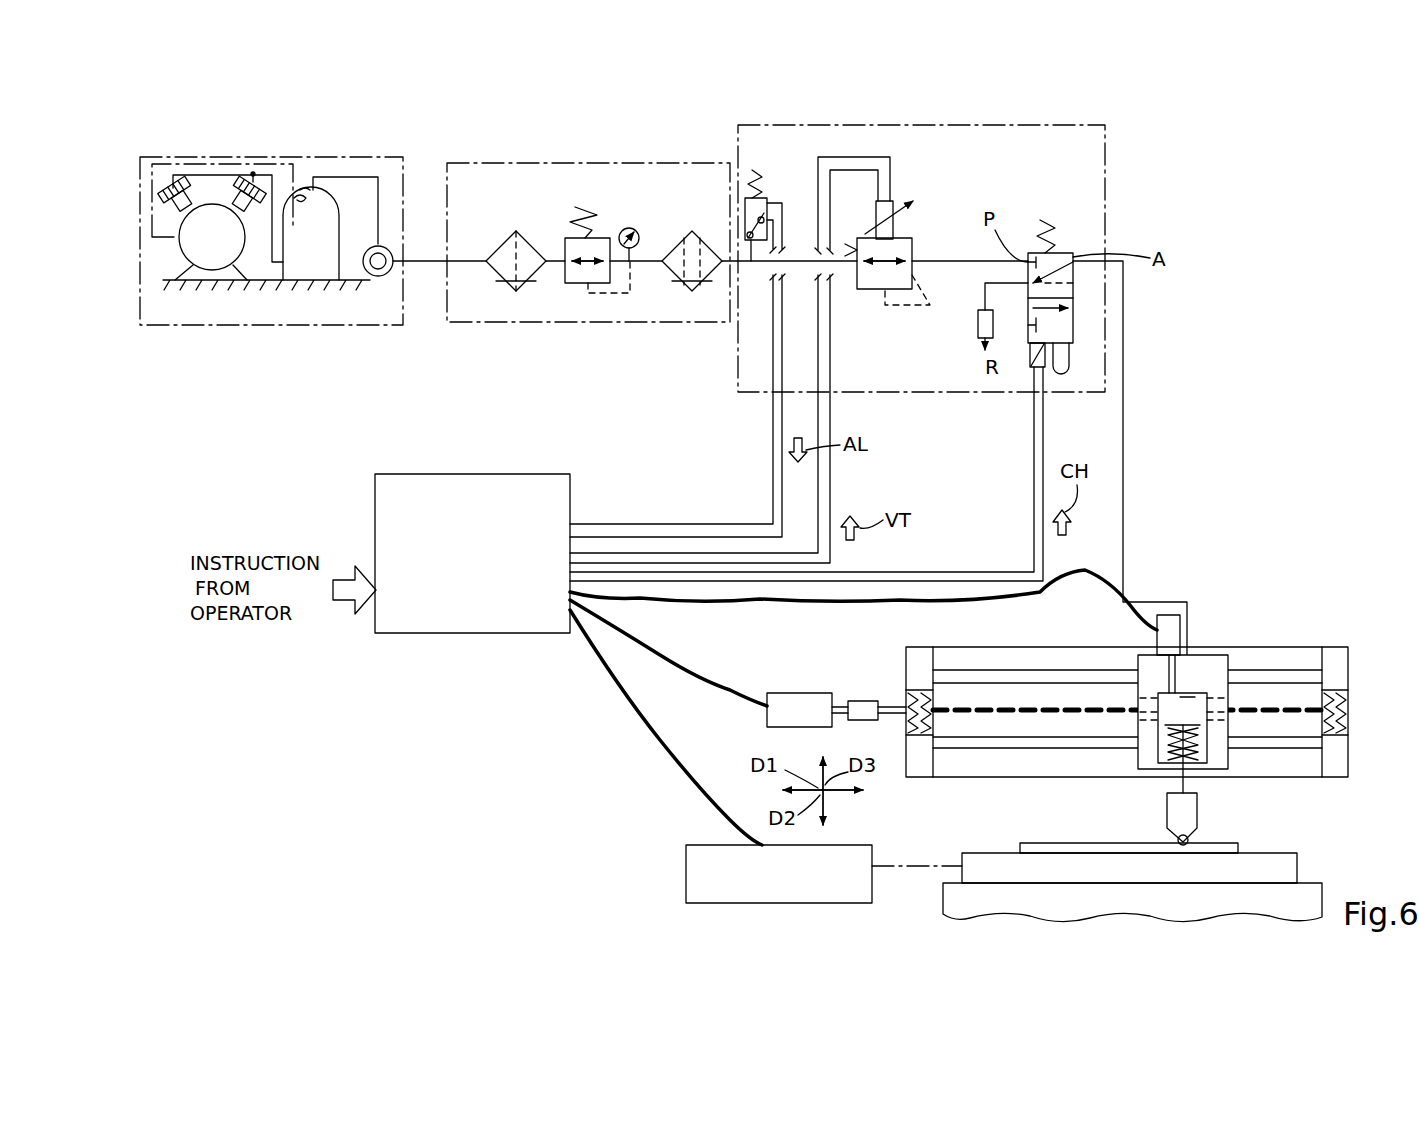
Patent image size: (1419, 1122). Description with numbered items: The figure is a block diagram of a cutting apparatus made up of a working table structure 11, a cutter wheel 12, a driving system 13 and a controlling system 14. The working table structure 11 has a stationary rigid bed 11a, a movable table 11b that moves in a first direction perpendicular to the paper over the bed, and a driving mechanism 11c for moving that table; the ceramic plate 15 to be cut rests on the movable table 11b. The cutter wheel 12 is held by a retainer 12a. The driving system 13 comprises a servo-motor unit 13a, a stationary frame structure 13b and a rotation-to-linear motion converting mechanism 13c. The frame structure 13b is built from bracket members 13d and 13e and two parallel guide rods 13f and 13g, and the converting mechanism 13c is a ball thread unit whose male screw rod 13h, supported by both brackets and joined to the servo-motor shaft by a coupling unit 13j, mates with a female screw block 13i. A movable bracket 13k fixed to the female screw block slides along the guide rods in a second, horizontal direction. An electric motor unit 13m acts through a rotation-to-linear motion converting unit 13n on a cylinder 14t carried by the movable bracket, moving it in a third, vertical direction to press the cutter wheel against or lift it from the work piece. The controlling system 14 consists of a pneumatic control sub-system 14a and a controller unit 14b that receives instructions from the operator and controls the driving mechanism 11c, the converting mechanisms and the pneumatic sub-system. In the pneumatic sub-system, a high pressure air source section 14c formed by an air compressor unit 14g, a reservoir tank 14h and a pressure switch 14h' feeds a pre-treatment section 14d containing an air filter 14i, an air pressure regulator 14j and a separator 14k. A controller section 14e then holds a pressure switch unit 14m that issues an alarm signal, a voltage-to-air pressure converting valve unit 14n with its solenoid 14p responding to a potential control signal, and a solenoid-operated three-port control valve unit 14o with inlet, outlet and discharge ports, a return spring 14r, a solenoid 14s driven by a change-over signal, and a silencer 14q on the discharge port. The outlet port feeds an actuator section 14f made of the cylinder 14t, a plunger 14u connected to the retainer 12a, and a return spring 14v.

The working table structure 11 is at (672, 828).
The stationary rigid bed 11a is at (943, 897).
The movable table 11b is at (967, 853).
The driving mechanism 11c is at (686, 878).
The cutter wheel 12 is at (1190, 839).
The retainer 12a is at (1198, 810).
The driving system 13 is at (760, 668).
The servo-motor unit 13a is at (800, 693).
The stationary frame structure 13b is at (1352, 614).
The rotation-to-linear motion converting mechanism 13c is at (1215, 632).
The bracket member 13d is at (920, 647).
The bracket member 13e is at (1335, 648).
The guide rod 13f is at (1027, 683).
The guide rod 13g is at (1020, 748).
The male screw rod 13h is at (968, 700).
The female screw block 13i is at (1105, 685).
The coupling unit 13j is at (858, 701).
The movable bracket 13k is at (1138, 763).
The electric motor unit 13m is at (1162, 693).
The rotation-to-linear motion converting unit 13n is at (1140, 697).
The controlling system 14 is at (1228, 206).
The pneumatic control sub-system 14a is at (1141, 232).
The controller unit 14b is at (378, 474).
The high pressure air source section 14c is at (190, 157).
The pre-treatment section 14d is at (582, 163).
The controller section 14e is at (1105, 166).
The actuator section 14f is at (1204, 687).
The air compressor unit 14g is at (212, 270).
The reservoir tank 14h is at (338, 270).
The pressure switch 14h' is at (319, 155).
The air filter 14i is at (500, 280).
The air pressure regulator 14j is at (565, 278).
The separator 14k is at (680, 280).
The pressure switch unit 14m is at (767, 203).
The voltage-to-air pressure converting valve unit 14n is at (915, 242).
The solenoid-operated three-port control valve unit 14o is at (1068, 250).
The solenoid 14p is at (905, 205).
The silencer 14q is at (978, 325).
The return spring 14r is at (1045, 218).
The solenoid 14s is at (1030, 368).
The cylinder 14t is at (1216, 655).
The plunger 14u is at (1187, 787).
The return spring 14v is at (1327, 760).
The ceramic plate 15 is at (1060, 843).